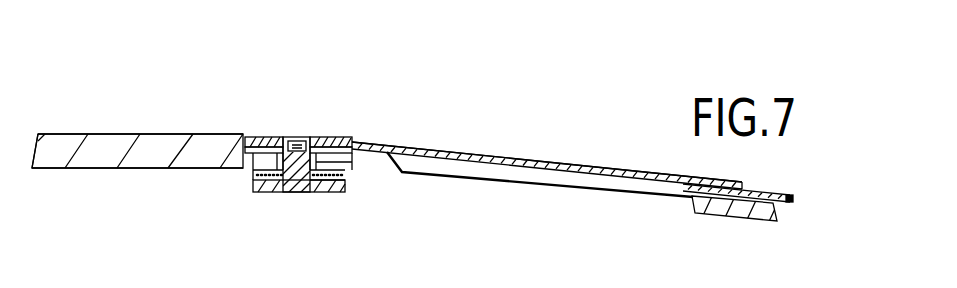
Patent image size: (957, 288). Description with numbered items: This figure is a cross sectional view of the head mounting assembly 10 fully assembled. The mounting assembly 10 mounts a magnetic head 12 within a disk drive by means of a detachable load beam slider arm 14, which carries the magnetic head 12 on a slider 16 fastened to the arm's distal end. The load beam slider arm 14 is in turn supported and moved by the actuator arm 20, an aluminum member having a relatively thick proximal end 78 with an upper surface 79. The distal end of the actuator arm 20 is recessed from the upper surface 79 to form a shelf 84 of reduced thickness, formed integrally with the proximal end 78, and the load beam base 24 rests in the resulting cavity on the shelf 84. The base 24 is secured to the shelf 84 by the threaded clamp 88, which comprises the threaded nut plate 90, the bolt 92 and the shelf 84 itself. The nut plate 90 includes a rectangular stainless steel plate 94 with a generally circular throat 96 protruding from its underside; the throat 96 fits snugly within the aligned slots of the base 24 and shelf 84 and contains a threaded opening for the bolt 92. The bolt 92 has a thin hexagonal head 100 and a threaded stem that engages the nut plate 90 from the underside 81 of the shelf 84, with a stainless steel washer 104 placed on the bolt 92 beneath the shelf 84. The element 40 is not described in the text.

The mounting assembly 10 is at (485, 100).
The magnetic head 12 is at (760, 219).
The load beam slider arm 14 is at (522, 151).
The slider 16 is at (793, 199).
The actuator arm 20 is at (79, 106).
The load beam base 24 is at (354, 142).
The stiffener plate 40 is at (554, 188).
The proximal end 78 is at (58, 132).
The upper surface 79 is at (103, 133).
The underside 81 is at (117, 170).
The shelf 84 is at (252, 171).
The threaded clamp 88 is at (299, 101).
The threaded nut plate 90 is at (339, 131).
The bolt 92 is at (269, 198).
The plate 94 is at (263, 136).
The throat 96 is at (353, 160).
The head 100 is at (305, 193).
The washer 104 is at (345, 181).